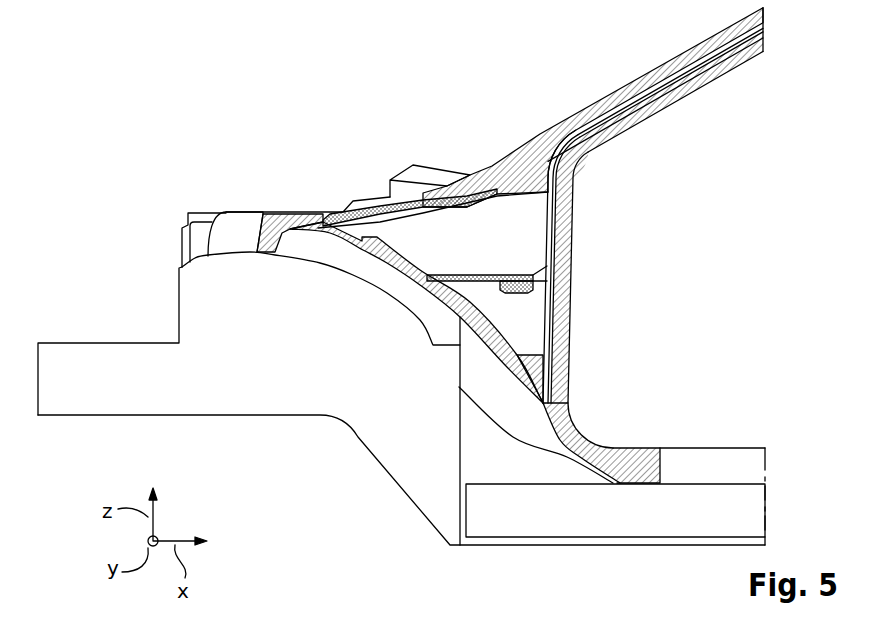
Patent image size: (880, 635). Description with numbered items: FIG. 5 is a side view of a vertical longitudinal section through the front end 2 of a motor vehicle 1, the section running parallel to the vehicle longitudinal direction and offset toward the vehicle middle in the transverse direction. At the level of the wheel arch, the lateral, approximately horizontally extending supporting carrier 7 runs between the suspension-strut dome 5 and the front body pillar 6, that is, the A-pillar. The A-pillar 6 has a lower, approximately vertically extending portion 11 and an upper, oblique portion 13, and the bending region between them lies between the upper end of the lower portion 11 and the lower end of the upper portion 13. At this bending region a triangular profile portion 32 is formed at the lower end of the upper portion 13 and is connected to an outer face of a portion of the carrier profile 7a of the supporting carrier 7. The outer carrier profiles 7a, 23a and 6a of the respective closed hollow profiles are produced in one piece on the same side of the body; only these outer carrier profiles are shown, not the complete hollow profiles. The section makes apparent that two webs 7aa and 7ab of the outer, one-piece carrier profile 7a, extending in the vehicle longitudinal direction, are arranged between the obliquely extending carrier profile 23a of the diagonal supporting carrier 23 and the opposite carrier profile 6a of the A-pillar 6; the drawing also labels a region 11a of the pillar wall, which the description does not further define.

The motor vehicle 1 is at (401, 379).
The front end 2 is at (133, 258).
The suspension-strut dome 5 is at (242, 224).
The front body pillar 6 is at (653, 245).
The carrier profile of the A-pillar 6a is at (652, 306).
The supporting carrier 7 is at (519, 205).
The carrier profile 7a is at (519, 205).
The web 7aa is at (363, 211).
The web 7ab is at (487, 272).
The lower portion 11 is at (652, 306).
The side wall portion 11a is at (563, 303).
The upper portion 13 is at (613, 101).
The supporting carrier 23 is at (416, 312).
The carrier profile 23a is at (447, 296).
The triangular profile portion 32 is at (528, 172).